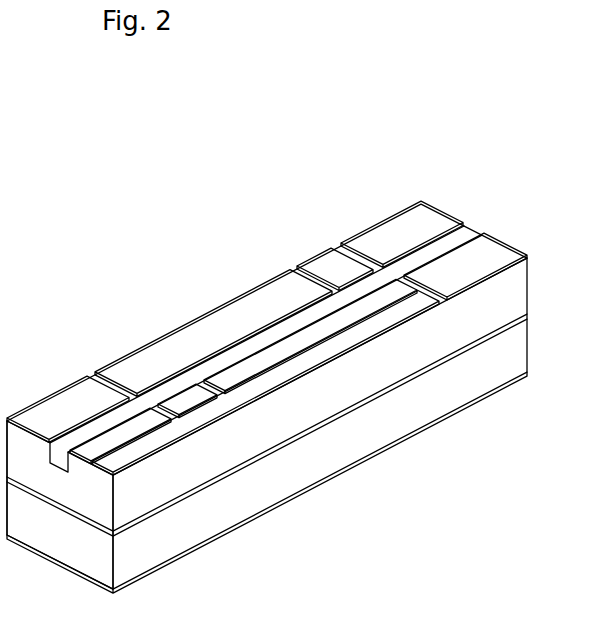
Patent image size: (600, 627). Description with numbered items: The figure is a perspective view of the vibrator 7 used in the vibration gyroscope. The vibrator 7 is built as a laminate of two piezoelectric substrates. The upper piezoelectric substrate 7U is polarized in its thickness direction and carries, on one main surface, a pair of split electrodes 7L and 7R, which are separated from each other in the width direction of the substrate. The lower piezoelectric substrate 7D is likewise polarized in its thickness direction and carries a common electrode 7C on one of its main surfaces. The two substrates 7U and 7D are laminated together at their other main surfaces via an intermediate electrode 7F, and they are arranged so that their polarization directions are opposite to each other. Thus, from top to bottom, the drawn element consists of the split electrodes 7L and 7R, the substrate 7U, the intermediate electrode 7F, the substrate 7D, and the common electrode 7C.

The vibrator 7 is at (168, 218).
The split electrode 7L is at (396, 247).
The split electrode 7R is at (457, 280).
The intermediate electrode 7F is at (403, 382).
The piezoelectric substrate 7U is at (250, 438).
The piezoelectric substrate 7D is at (252, 493).
The common electrode 7C is at (410, 440).